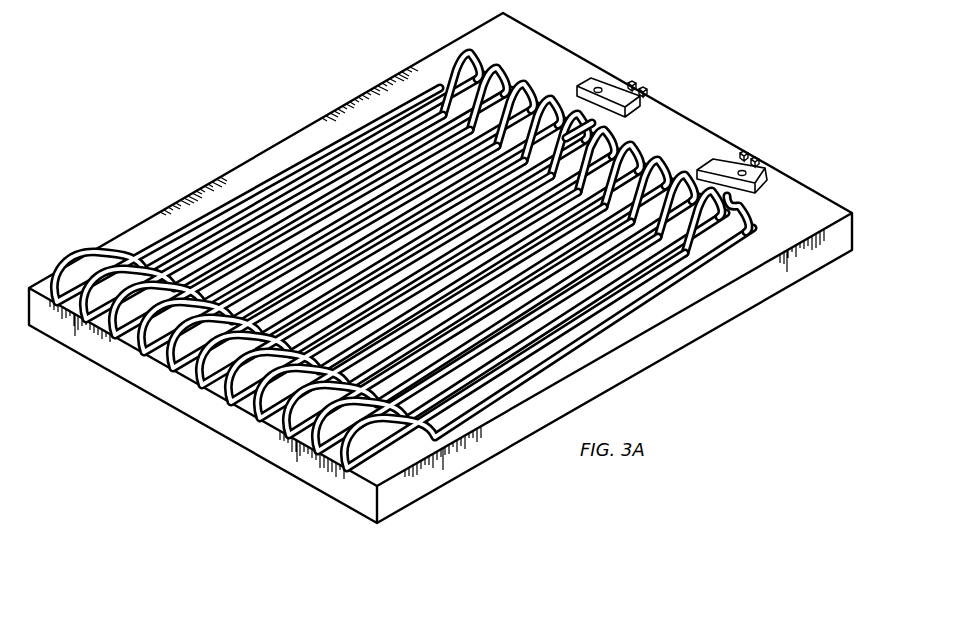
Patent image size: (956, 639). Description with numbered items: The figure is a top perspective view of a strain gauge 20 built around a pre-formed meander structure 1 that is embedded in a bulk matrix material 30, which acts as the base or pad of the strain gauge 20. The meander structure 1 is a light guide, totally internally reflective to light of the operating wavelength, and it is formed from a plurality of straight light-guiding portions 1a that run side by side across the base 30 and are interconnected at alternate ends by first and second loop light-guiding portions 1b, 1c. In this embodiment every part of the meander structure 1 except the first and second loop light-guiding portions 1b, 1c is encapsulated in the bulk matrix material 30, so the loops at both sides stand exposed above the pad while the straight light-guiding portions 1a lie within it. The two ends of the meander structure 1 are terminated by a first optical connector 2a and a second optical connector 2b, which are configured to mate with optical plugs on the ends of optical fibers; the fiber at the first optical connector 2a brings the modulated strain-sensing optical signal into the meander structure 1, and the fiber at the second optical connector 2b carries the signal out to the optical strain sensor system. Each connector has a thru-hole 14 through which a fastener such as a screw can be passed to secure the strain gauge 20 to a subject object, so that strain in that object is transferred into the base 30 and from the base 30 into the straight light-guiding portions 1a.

The meander structure 1 is at (360, 114).
The straight light-guiding portions 1a is at (293, 187).
The first loop light-guiding portions 1b is at (450, 62).
The second loop light-guiding portions 1c is at (82, 250).
The first optical connector 2a is at (758, 178).
The second optical connector 2b is at (594, 83).
The thru-hole 14 is at (603, 83).
The strain gauge 20 is at (706, 66).
The bulk matrix material 30 is at (548, 58).